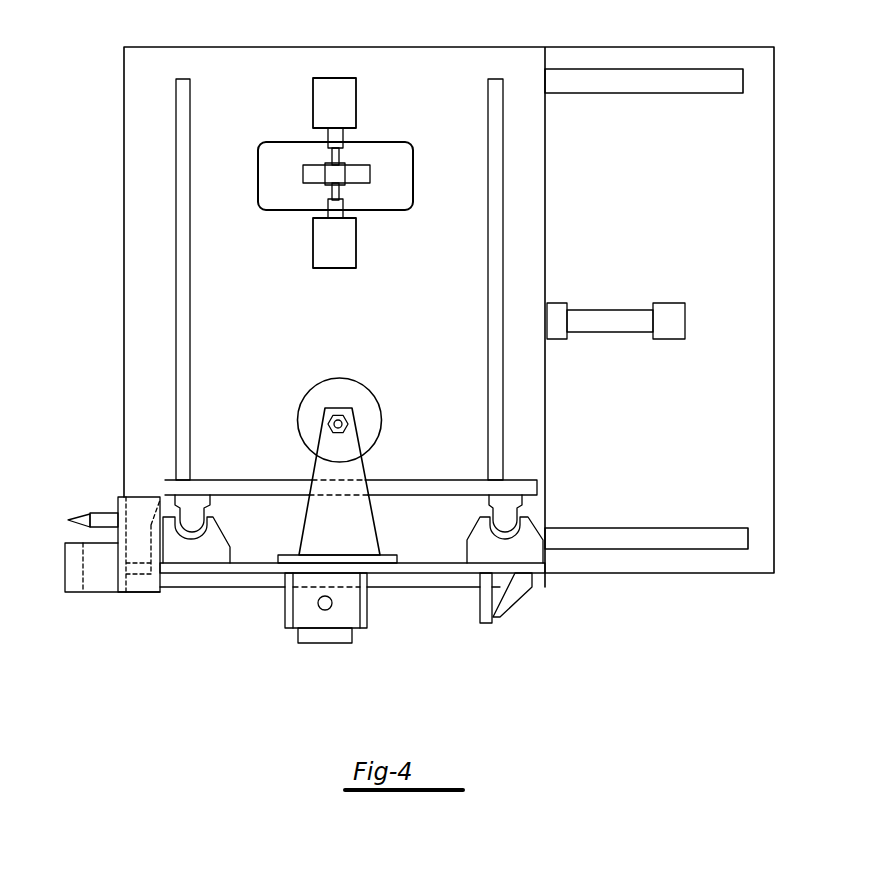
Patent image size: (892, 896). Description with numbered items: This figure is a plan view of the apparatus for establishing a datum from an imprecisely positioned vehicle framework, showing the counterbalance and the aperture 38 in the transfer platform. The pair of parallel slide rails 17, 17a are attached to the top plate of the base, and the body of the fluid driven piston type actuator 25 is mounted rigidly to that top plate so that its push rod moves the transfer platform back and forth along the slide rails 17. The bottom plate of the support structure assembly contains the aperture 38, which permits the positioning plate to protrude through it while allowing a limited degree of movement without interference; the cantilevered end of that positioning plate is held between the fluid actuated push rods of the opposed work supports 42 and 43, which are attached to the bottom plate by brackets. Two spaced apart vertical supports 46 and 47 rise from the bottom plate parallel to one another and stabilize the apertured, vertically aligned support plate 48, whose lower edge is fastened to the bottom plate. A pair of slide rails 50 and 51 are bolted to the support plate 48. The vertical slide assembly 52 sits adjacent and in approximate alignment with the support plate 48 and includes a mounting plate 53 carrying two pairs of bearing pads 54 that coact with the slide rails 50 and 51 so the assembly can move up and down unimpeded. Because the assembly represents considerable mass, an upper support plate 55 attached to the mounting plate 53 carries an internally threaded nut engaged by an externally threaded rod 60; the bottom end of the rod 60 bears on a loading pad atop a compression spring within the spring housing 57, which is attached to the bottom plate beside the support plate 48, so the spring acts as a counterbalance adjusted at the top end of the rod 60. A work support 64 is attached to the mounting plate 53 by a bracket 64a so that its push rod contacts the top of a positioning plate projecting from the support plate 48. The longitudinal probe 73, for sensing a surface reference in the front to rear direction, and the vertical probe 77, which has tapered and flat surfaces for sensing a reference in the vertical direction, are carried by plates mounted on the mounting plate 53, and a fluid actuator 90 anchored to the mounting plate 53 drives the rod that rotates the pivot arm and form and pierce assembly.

The slide rails 17 is at (642, 69).
The lower horizontal frame bar 17a is at (652, 549).
The fluid driven piston type actuator 25 is at (670, 303).
The aperture 38 is at (279, 142).
The work support 42 is at (357, 90).
The work support 43 is at (357, 252).
The vertical support 46 is at (176, 243).
The vertical support 47 is at (503, 215).
The support plate 48 is at (510, 480).
The slide rail 50 is at (208, 498).
The slide rail 51 is at (522, 505).
The vertical slide assembly 52 is at (535, 588).
The mounting plate 53 is at (205, 573).
The bearing pads 54 is at (230, 546).
The upper support plate 55 is at (367, 468).
The spring housing 57 is at (367, 388).
The threaded rod 60 is at (331, 414).
The work support 64 is at (330, 643).
The bracket 64a is at (367, 605).
The longitudinal probe 73 is at (98, 512).
The vertical probe 77 is at (93, 595).
The fluid actuator 90 is at (488, 623).